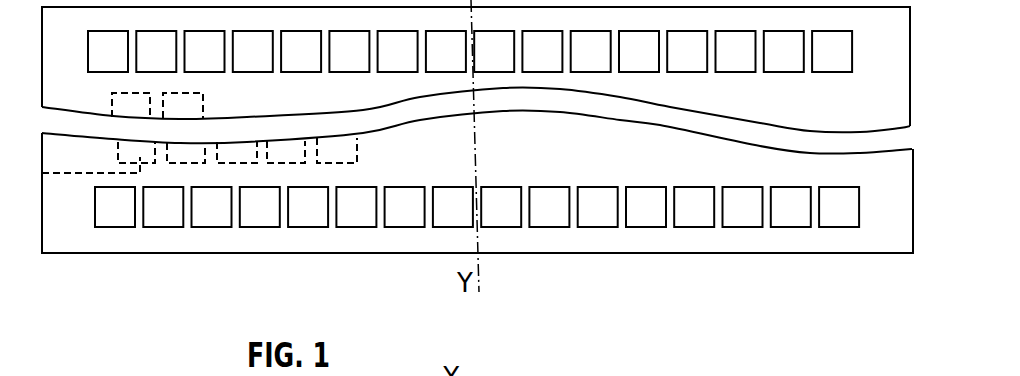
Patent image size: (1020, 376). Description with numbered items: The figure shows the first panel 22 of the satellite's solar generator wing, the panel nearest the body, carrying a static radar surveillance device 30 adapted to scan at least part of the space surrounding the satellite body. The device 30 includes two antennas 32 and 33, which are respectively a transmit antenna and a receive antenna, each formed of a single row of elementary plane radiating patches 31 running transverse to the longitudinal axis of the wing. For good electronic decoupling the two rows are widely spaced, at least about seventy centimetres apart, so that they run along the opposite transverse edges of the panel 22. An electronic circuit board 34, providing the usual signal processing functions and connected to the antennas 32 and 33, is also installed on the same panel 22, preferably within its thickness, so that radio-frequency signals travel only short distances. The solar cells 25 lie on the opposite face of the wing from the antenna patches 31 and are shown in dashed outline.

The first panel 22 is at (860, 254).
The solar cells 25 is at (125, 111).
The static radar surveillance device 30 is at (115, 291).
The elementary plane radiating patches 31 is at (646, 208).
The transmit antenna 32 is at (787, 75).
The receive antenna 33 is at (744, 184).
The electronic circuit board 34 is at (70, 160).